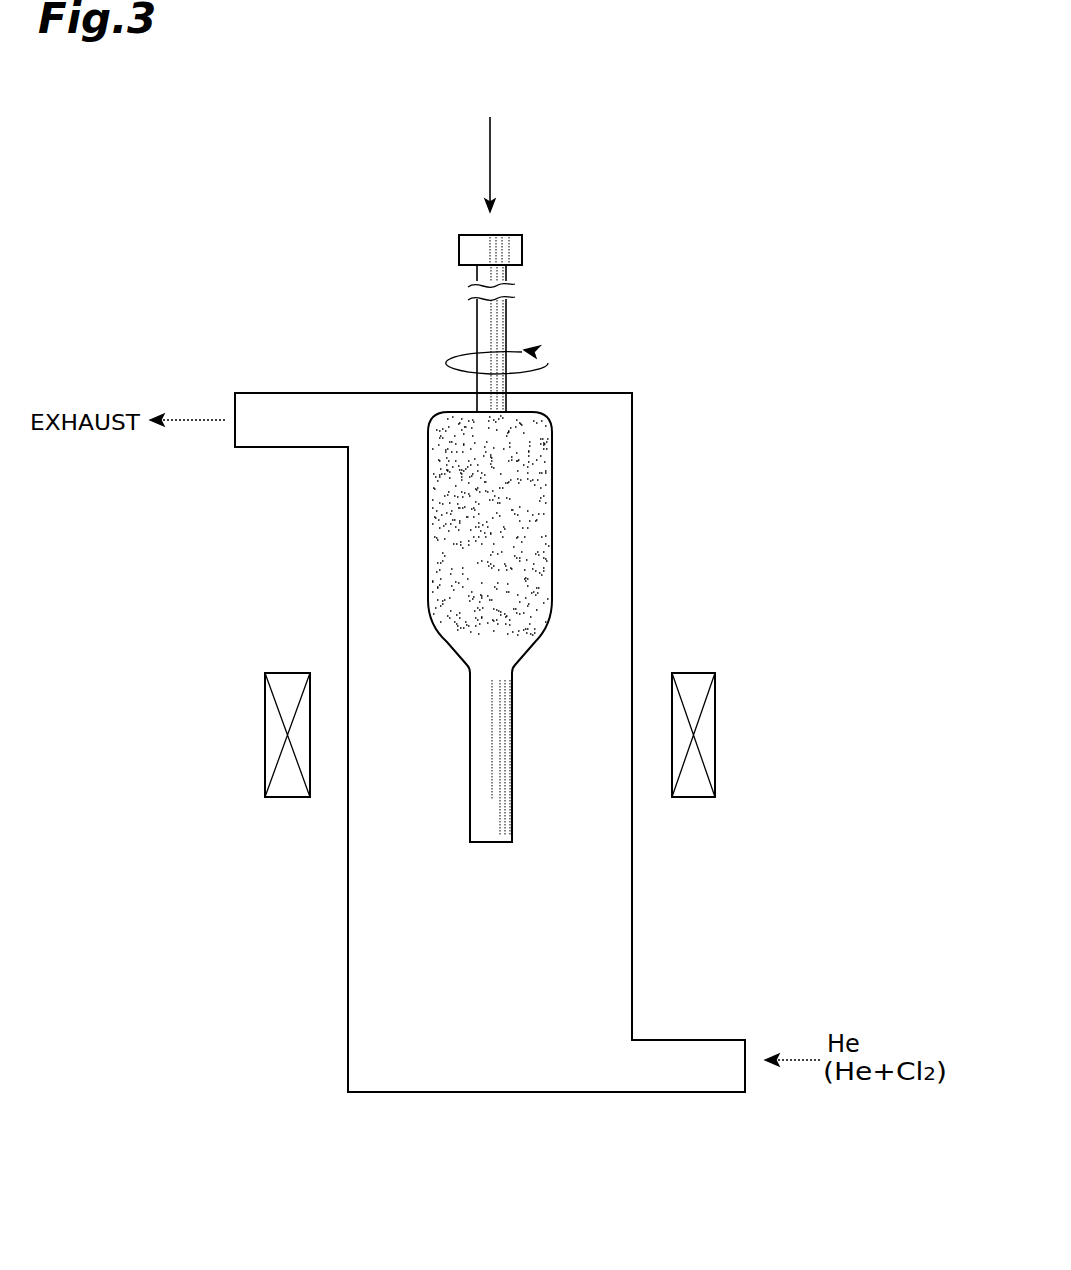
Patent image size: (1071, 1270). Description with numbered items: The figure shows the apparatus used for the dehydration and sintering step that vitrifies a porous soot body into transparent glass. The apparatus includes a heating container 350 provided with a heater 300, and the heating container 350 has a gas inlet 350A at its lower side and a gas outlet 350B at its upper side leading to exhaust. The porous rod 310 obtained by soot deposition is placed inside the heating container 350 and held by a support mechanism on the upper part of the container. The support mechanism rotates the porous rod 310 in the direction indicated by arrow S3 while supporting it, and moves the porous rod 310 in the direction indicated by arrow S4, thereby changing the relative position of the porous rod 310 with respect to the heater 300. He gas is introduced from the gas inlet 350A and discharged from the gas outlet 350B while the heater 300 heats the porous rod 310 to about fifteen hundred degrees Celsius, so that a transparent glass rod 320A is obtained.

The heater 300 is at (265, 740).
The porous rod 310 is at (538, 500).
The transparent glass rod 320A is at (490, 827).
The heating container 350 is at (632, 590).
The gas inlet 350A is at (707, 1078).
The gas outlet 350B is at (281, 405).
The arrow S3 is at (542, 358).
The arrow S4 is at (490, 152).